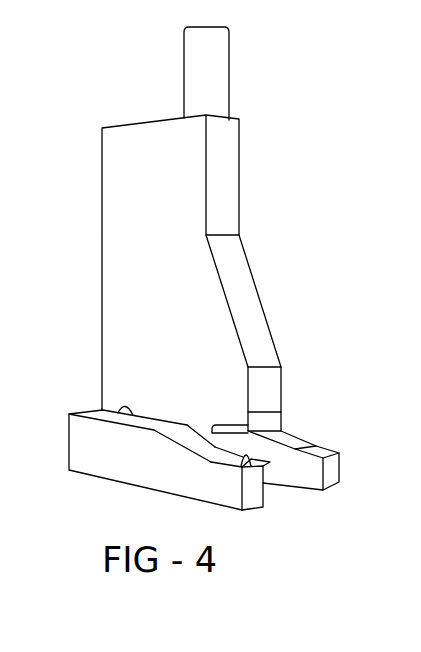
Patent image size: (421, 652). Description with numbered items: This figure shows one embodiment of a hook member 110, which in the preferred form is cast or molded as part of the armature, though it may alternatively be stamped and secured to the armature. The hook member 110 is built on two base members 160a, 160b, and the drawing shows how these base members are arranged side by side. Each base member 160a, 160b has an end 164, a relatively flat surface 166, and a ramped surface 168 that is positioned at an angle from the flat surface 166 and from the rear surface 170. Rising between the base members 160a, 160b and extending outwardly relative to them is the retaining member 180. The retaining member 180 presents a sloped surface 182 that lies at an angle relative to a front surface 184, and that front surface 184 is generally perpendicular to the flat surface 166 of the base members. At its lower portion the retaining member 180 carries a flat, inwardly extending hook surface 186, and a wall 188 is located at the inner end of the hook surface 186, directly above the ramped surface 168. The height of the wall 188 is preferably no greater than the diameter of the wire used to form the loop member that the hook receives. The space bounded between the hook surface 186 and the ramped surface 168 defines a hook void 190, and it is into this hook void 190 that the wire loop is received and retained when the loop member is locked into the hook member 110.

The hook member 110 is at (224, 310).
The retaining member 180 is at (122, 224).
The sloped surface 182 is at (240, 285).
The front surface 184 is at (263, 377).
The hook surface 186 is at (230, 428).
The wall 188 is at (212, 428).
The base member 160a is at (136, 483).
The base member 160b is at (312, 498).
The end 164 is at (302, 468).
The flat surface 166 is at (253, 493).
The ramped surface 168 is at (193, 437).
The rear surface 170 is at (95, 441).
The hook void 190 is at (191, 437).